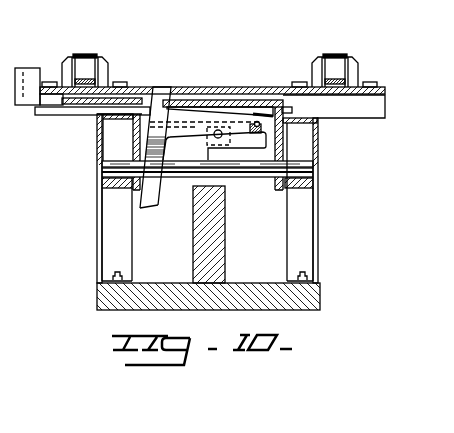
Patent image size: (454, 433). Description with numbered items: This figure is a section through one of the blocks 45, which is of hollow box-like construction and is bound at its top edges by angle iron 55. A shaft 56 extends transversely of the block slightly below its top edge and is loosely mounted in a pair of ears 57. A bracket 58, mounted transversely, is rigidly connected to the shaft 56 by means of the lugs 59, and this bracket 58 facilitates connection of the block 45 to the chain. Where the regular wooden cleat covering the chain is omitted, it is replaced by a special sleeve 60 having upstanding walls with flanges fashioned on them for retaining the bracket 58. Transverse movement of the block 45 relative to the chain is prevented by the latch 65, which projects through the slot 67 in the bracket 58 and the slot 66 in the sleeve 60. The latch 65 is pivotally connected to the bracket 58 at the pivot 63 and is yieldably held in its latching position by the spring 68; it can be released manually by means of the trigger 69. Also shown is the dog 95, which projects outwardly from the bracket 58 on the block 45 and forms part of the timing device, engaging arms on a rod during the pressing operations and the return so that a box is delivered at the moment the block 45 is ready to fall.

The block 45 is at (91, 232).
The angle iron 55 is at (318, 137).
The shaft 56 is at (312, 165).
The ears 57 is at (102, 181).
The bracket 58 is at (83, 117).
The lugs 59 is at (134, 131).
The sleeve 60 is at (378, 107).
The pivot 63 is at (216, 137).
The latch 65 is at (170, 93).
The slot 66 is at (172, 93).
The slot 67 is at (170, 102).
The spring 68 is at (256, 122).
The trigger 69 is at (155, 208).
The dog 95 is at (25, 70).